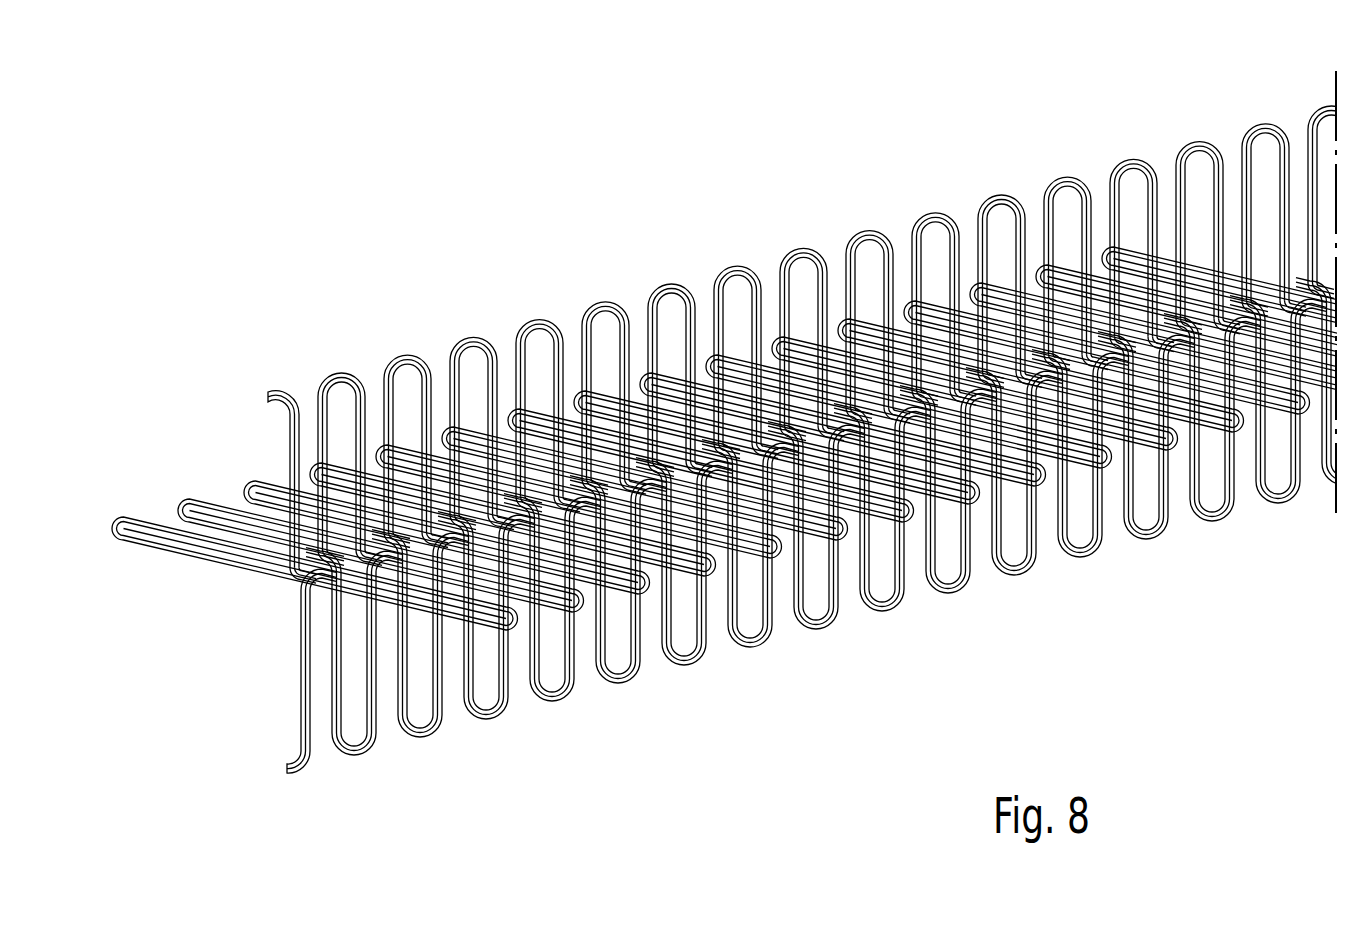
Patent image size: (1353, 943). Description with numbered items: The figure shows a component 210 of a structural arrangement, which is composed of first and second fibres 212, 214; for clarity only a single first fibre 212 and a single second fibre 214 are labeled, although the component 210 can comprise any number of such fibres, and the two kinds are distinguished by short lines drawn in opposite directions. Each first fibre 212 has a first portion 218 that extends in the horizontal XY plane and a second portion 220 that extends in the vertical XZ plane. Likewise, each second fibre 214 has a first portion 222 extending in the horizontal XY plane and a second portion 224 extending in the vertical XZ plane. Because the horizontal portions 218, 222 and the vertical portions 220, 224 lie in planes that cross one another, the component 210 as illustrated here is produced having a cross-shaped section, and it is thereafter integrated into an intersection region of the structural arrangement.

The component 210 is at (314, 208).
The first fibre 212 is at (485, 721).
The second fibre 214 is at (350, 435).
The first portion 218 is at (285, 573).
The second portion 220 is at (788, 536).
The first portion 222 is at (388, 618).
The second portion 224 is at (779, 344).